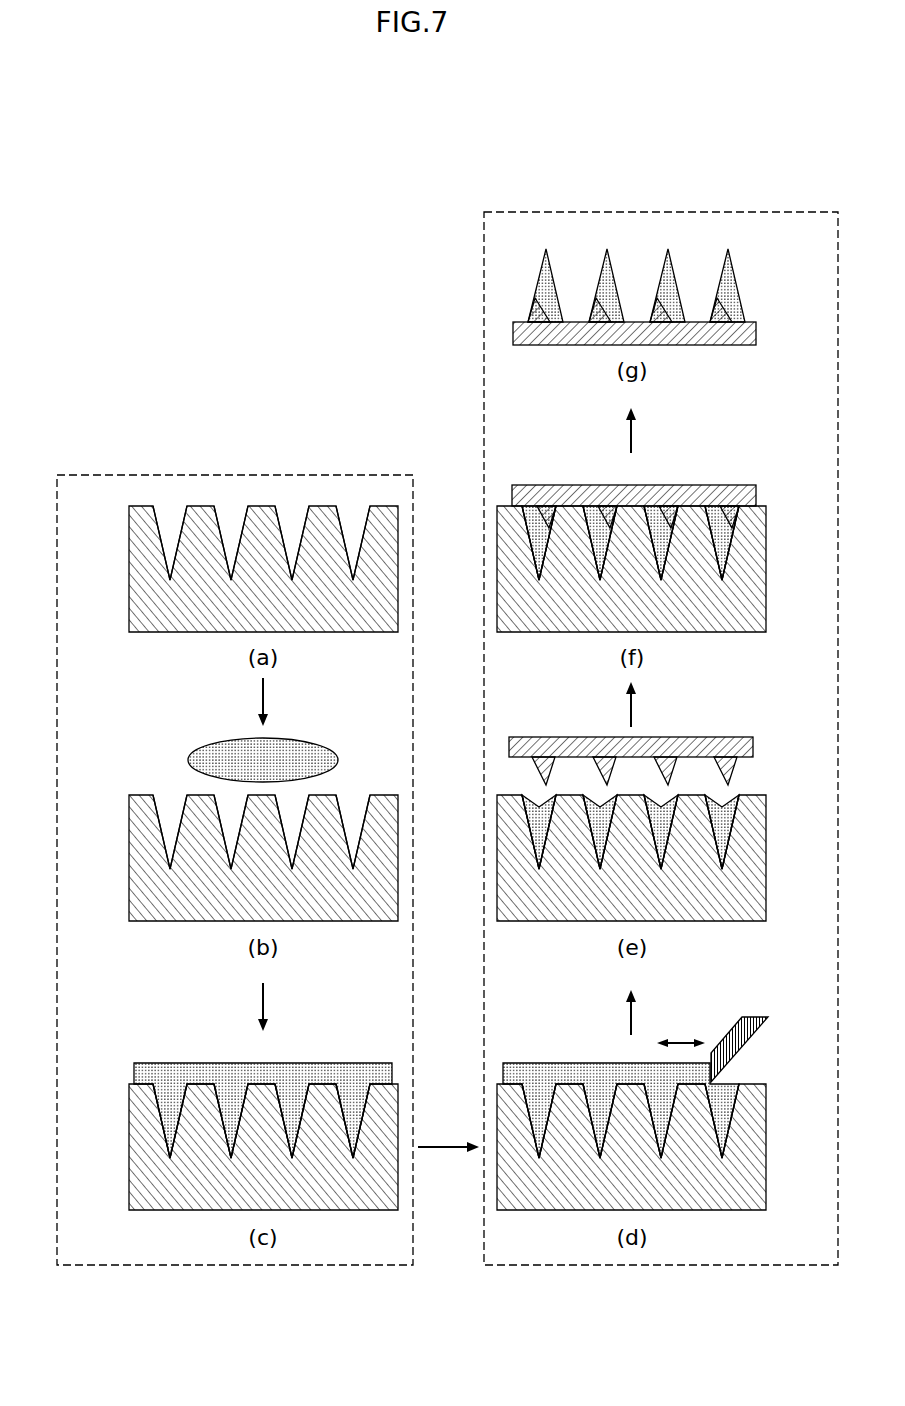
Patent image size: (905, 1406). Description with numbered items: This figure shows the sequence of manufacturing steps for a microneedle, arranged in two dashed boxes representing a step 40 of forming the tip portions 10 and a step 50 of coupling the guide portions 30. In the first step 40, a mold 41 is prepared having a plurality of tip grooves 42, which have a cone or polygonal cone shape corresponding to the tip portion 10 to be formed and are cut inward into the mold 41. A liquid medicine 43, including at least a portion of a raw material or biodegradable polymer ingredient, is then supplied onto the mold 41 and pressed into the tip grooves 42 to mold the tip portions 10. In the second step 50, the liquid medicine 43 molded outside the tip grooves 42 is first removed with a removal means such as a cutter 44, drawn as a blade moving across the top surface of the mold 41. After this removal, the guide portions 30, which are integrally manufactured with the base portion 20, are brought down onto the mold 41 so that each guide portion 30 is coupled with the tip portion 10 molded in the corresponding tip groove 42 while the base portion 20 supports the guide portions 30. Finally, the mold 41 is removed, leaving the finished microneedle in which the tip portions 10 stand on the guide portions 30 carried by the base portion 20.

The tip portion 10 is at (735, 281).
The base portion 20 is at (730, 314).
The guide portion 30 is at (753, 336).
The step of forming the tip portions 40 is at (236, 475).
The mold 41 is at (143, 601).
The tip groove 42 is at (165, 535).
The liquid medicine 43 is at (218, 757).
The cutter 44 is at (743, 1040).
The step of coupling the guide portions 50 is at (660, 212).